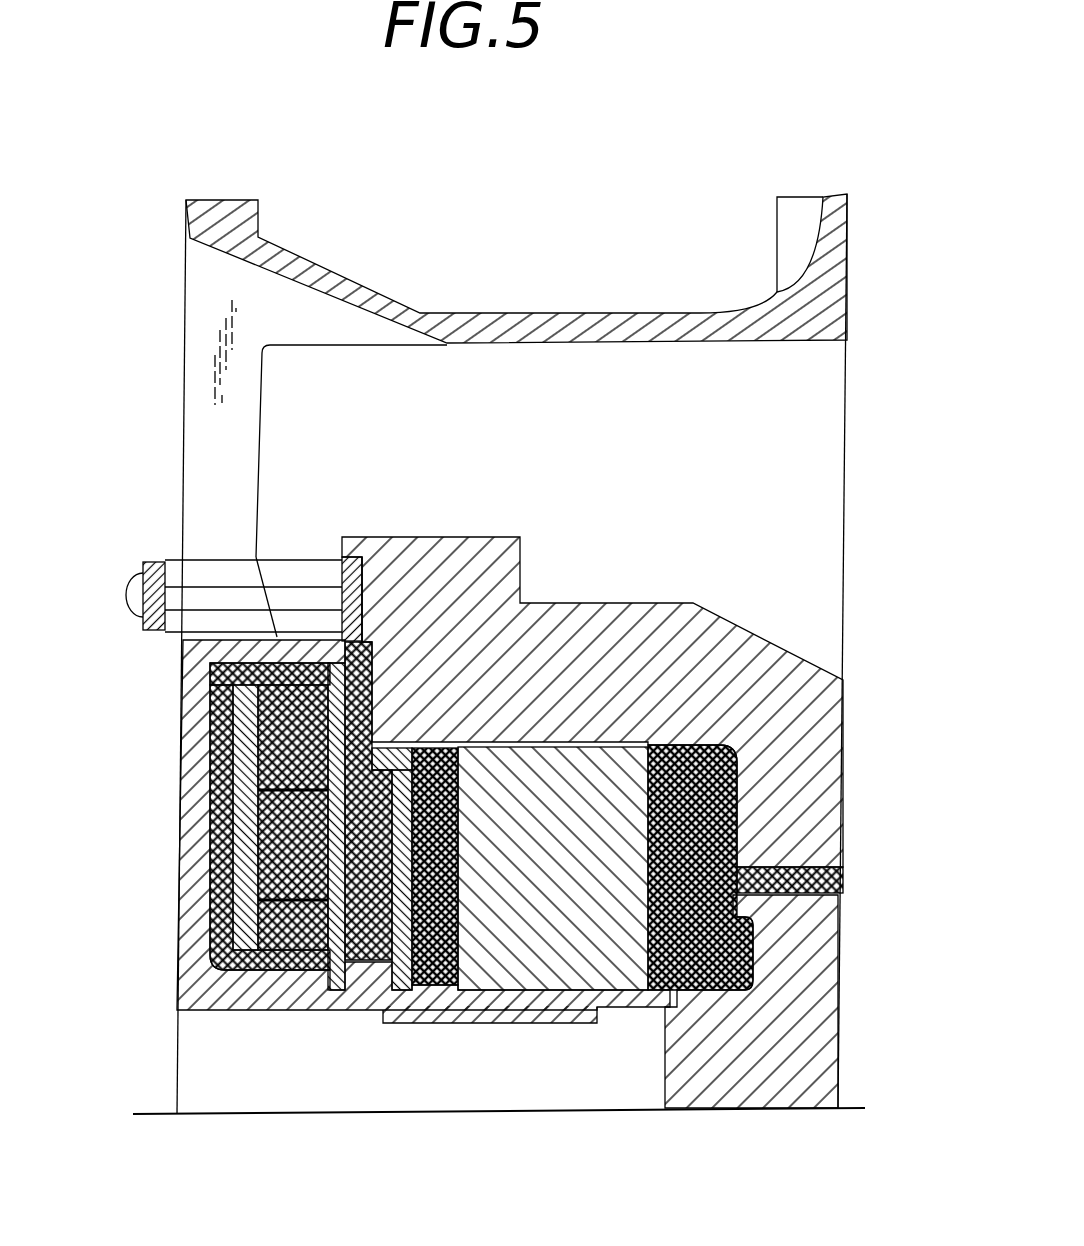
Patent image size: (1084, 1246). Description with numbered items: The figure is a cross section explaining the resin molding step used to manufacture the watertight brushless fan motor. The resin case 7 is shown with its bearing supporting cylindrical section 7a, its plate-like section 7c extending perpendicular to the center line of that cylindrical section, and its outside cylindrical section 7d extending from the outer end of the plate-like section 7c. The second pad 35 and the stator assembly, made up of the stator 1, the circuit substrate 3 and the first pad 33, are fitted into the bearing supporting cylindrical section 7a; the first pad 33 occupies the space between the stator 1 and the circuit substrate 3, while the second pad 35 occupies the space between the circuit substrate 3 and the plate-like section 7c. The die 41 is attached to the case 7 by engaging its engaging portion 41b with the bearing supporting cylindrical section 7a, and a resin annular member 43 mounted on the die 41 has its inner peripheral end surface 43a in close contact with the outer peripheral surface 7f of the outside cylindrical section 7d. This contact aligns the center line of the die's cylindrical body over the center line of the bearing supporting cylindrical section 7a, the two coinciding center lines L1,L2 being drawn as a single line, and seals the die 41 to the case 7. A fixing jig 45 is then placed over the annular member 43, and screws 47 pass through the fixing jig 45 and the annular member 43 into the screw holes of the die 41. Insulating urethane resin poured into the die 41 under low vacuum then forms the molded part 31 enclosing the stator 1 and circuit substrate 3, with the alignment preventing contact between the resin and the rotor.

The stator 1 is at (550, 915).
The circuit substrate 3 is at (303, 982).
The case 7 is at (200, 367).
The bearing supporting cylindrical section 7a is at (535, 1000).
The plate-like section 7c is at (182, 812).
The outside cylindrical section 7d is at (250, 640).
The outer peripheral surface 7f is at (365, 593).
The molded part 31 is at (200, 925).
The first pad 33 is at (368, 982).
The second pad 35 is at (205, 866).
The die 41 is at (622, 613).
The engaging portion 41b is at (837, 973).
The annular member 43 is at (340, 576).
The inner peripheral end surface 43a is at (225, 680).
The fixing jig 45 is at (124, 560).
The screws 47 is at (127, 598).
The center lines L1,L2 is at (848, 1107).